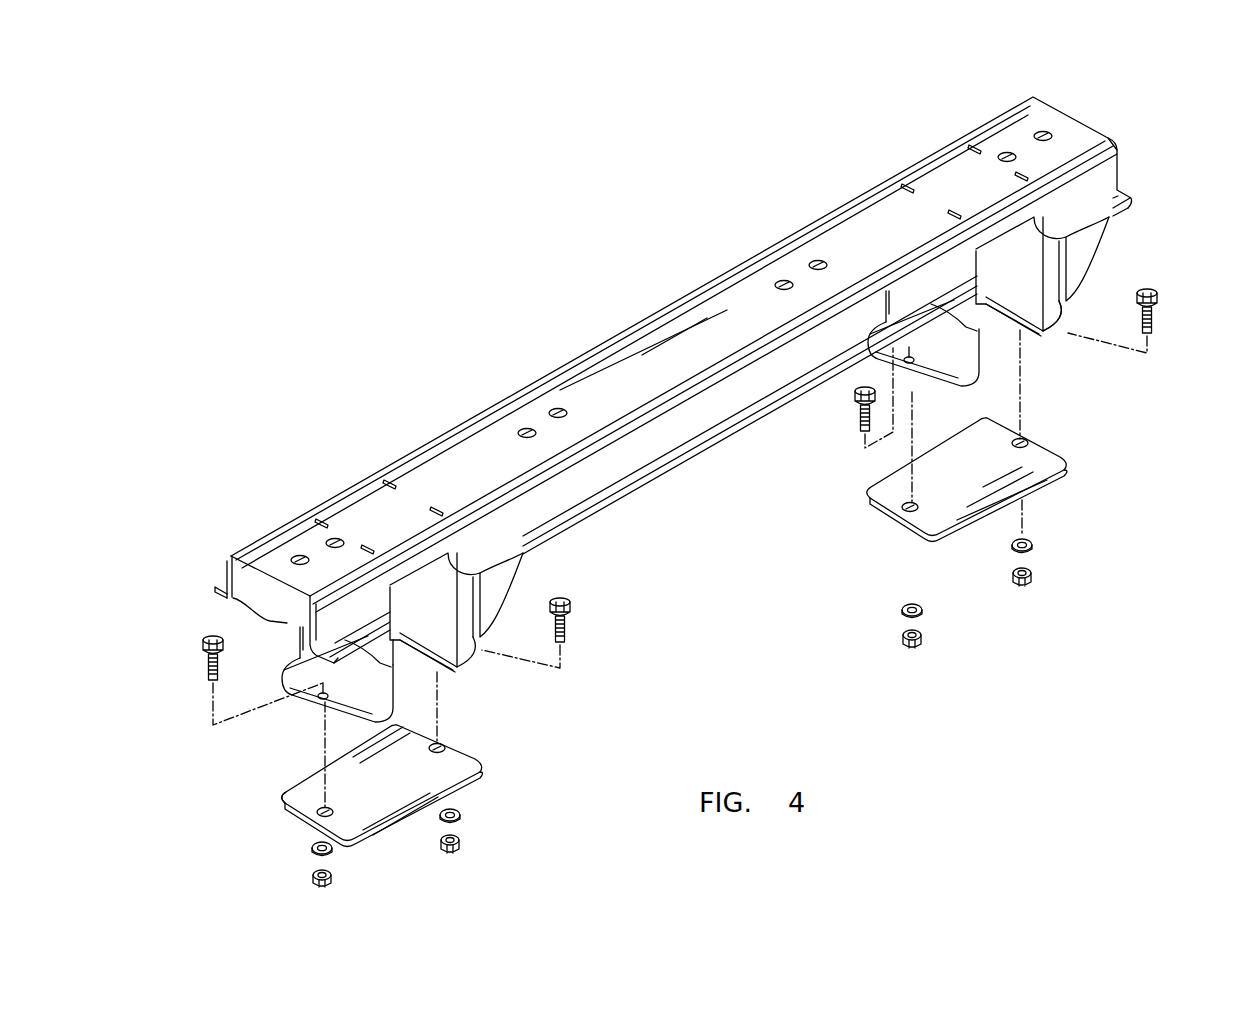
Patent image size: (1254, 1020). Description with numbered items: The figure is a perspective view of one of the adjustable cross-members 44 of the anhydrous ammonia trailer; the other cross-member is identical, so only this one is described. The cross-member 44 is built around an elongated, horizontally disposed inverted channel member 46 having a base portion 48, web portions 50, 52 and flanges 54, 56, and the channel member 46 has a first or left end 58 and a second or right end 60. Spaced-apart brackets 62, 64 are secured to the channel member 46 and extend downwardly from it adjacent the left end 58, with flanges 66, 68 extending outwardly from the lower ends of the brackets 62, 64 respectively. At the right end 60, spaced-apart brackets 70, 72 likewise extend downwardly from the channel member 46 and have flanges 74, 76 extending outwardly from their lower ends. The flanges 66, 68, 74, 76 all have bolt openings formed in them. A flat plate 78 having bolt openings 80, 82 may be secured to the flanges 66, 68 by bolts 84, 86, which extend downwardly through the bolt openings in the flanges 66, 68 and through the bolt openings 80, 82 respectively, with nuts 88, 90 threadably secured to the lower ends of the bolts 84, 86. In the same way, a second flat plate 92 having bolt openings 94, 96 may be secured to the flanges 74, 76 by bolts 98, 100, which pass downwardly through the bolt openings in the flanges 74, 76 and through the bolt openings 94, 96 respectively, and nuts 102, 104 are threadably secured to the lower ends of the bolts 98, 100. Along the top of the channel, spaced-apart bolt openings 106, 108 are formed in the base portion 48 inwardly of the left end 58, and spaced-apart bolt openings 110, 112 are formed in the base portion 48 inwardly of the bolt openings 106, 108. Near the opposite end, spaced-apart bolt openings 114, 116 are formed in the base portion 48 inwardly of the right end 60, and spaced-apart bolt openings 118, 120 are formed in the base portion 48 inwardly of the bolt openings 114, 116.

The cross-member 44 is at (613, 328).
The inverted channel member 46 is at (400, 455).
The base portion 48 is at (488, 484).
The web portion 50 is at (228, 560).
The web portion 52 is at (300, 628).
The flange 54 is at (214, 591).
The flange 56 is at (355, 712).
The first or left end 58 is at (254, 548).
The second or right end 60 is at (1087, 124).
The bracket 62 is at (392, 665).
The bracket 64 is at (508, 590).
The flange 66 is at (350, 643).
The flange 68 is at (482, 643).
The bracket 70 is at (1086, 247).
The bracket 72 is at (992, 340).
The flange 74 is at (1065, 305).
The flange 76 is at (957, 387).
The flat plate 78 is at (395, 835).
The bolt opening 80 is at (283, 800).
The bolt opening 82 is at (445, 748).
The bolt 84 is at (203, 643).
The bolt 86 is at (571, 611).
The nut 88 is at (314, 870).
The nut 90 is at (463, 832).
The flat plate 92 is at (882, 523).
The bolt opening 94 is at (1030, 444).
The bolt opening 96 is at (916, 508).
The bolt 98 is at (1156, 290).
The bolt 100 is at (858, 396).
The nut 102 is at (1030, 583).
The nut 104 is at (908, 642).
The bolt opening 106 is at (298, 554).
The bolt opening 108 is at (334, 537).
The bolt opening 110 is at (525, 427).
The bolt opening 112 is at (556, 407).
The bolt opening 114 is at (1046, 132).
The bolt opening 116 is at (1003, 154).
The bolt opening 118 is at (812, 264).
The bolt opening 120 is at (778, 284).